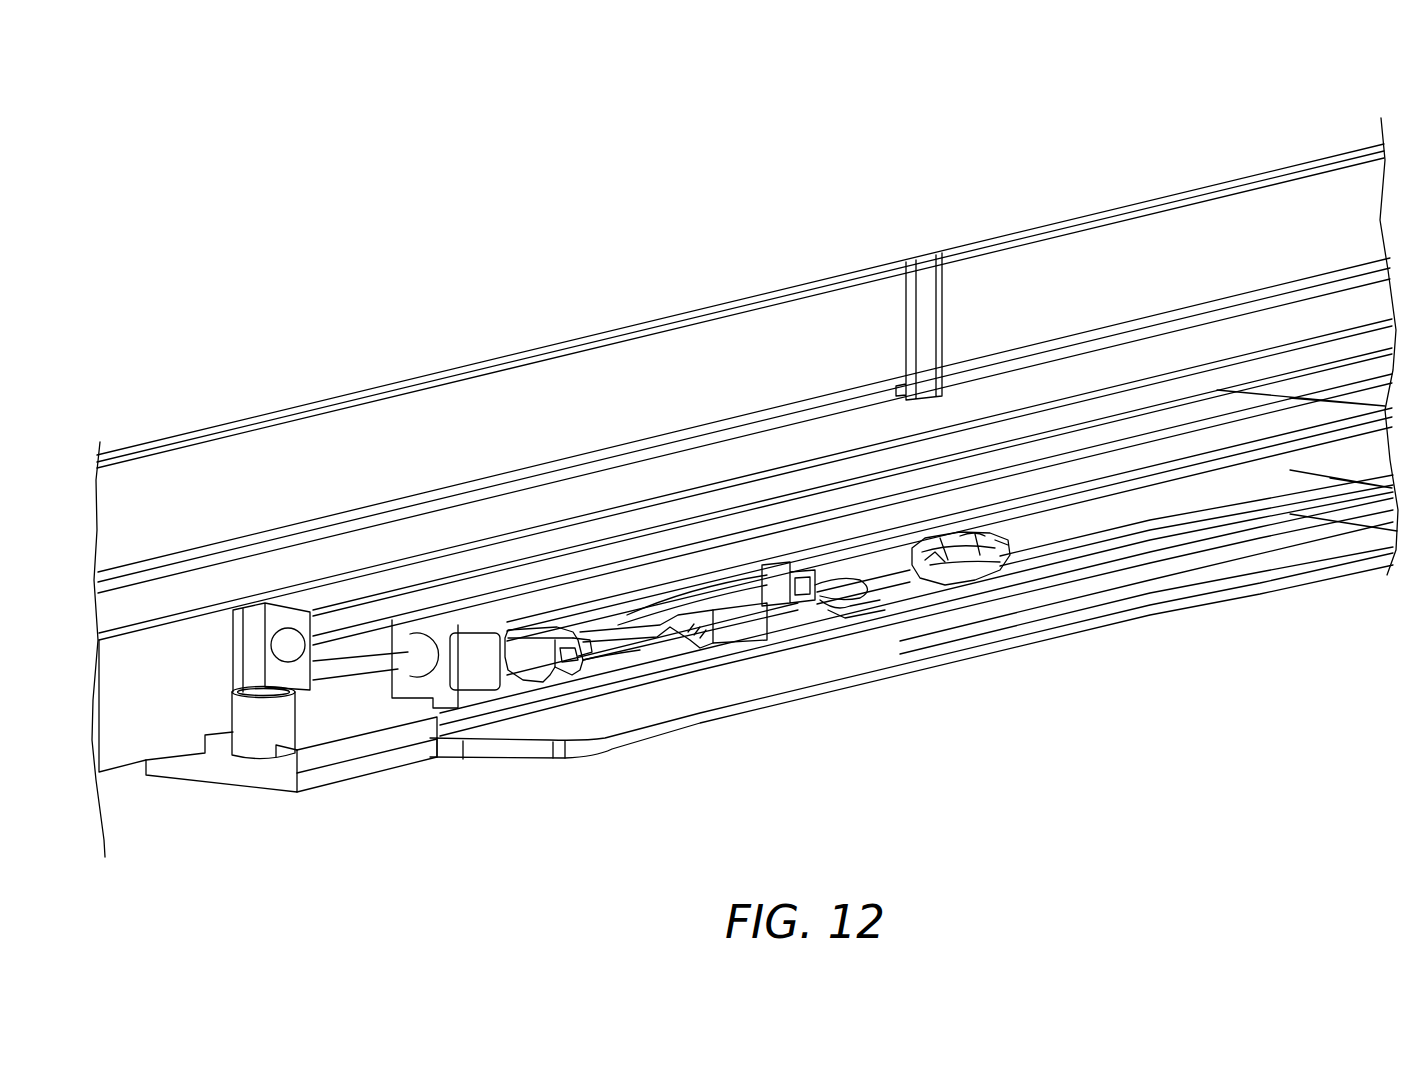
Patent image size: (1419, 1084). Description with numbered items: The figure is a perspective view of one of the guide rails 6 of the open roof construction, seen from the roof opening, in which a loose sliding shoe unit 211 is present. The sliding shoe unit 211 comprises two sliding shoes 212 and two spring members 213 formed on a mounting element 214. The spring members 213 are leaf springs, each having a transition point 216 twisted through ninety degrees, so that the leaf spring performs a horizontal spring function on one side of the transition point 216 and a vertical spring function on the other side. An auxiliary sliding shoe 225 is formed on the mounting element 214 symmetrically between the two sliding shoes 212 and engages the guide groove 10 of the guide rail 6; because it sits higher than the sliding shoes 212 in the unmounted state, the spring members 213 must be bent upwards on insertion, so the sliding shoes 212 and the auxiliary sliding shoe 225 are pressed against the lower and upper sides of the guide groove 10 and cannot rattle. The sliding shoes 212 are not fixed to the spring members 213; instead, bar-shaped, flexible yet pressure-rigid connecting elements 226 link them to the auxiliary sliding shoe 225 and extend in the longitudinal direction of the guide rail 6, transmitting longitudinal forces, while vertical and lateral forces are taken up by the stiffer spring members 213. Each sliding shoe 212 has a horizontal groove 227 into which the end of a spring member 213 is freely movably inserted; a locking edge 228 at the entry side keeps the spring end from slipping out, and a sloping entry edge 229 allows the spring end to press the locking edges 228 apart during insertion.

The guide rail 6 is at (335, 787).
The guide groove 10 is at (463, 673).
The sliding shoe unit 211 is at (1006, 602).
The sliding shoe 212 is at (542, 655).
The spring member 213 is at (693, 649).
The mounting element 214 is at (787, 639).
The transition point 216 is at (730, 612).
The auxiliary sliding shoe 225 is at (858, 574).
The connecting element 226 is at (832, 600).
The horizontal groove 227 is at (553, 670).
The locking edge 228 is at (578, 652).
The sloping entry edge 229 is at (633, 645).